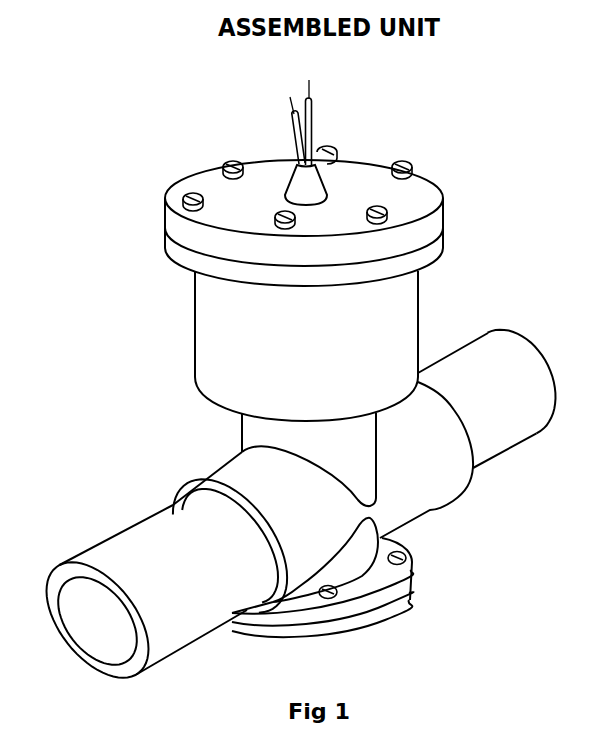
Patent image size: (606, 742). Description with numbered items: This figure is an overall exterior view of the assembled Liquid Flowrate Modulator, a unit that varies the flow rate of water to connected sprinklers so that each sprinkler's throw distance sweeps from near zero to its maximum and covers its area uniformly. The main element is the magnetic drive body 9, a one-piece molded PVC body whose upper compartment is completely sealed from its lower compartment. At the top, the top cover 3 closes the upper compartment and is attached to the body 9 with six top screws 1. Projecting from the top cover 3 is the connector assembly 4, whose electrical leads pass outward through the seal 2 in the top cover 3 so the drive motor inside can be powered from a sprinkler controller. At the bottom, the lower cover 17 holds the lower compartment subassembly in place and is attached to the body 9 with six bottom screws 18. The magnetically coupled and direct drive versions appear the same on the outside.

The top screws 1 is at (413, 163).
The seal 2 is at (323, 179).
The top cover 3 is at (230, 190).
The connector assembly 4 is at (311, 133).
The magnetic drive body 9 is at (195, 350).
The lower cover 17 is at (410, 598).
The bottom screws 18 is at (407, 557).